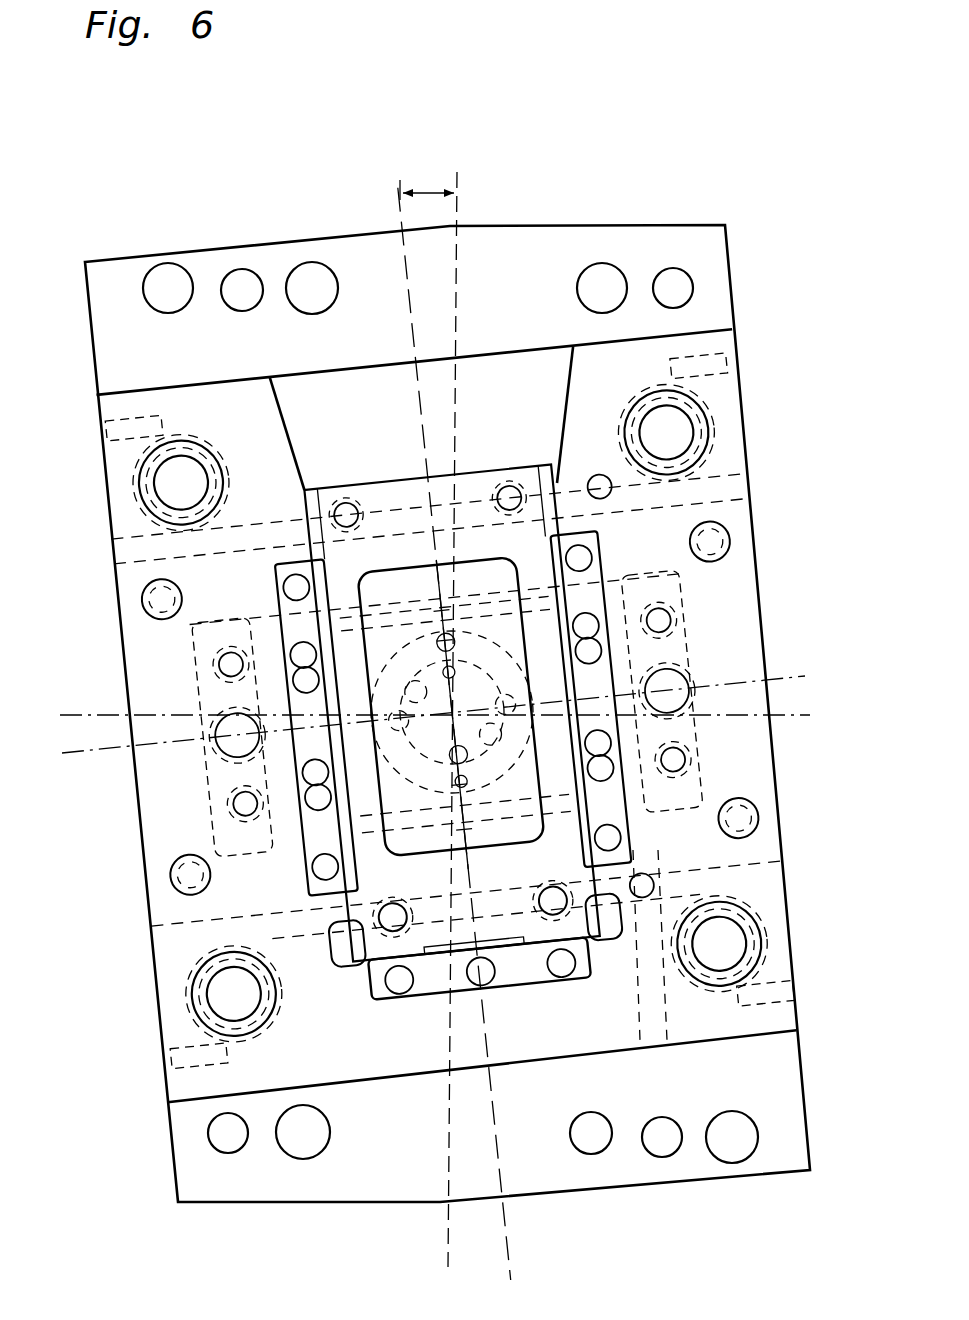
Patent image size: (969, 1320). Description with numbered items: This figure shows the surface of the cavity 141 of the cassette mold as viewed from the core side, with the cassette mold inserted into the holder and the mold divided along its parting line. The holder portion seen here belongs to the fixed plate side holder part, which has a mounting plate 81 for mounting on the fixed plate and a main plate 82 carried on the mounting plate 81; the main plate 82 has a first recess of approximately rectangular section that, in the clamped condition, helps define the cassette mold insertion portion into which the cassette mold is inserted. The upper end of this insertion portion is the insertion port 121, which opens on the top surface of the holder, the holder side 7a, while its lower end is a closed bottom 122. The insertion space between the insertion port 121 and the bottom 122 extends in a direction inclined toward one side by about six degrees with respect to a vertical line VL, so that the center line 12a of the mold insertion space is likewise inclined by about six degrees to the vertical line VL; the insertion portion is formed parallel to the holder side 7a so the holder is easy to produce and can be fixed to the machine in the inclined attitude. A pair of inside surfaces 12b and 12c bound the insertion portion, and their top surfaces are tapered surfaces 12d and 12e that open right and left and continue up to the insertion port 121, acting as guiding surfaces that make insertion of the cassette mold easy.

The mounting plate 81 is at (560, 238).
The main plate of the fixed plate side holder part 82 is at (450, 713).
The insertion port 121 is at (415, 362).
The bottom 122 is at (479, 964).
The center line of the mold insertion space 12a is at (454, 734).
The inside surface 12b is at (316, 727).
The inside surface 12c is at (590, 699).
The tapered surface 12d is at (287, 434).
The tapered surface 12e is at (565, 415).
The cavity 141 is at (481, 709).
The holder side 7a is at (127, 697).
The vertical line VL is at (448, 1248).